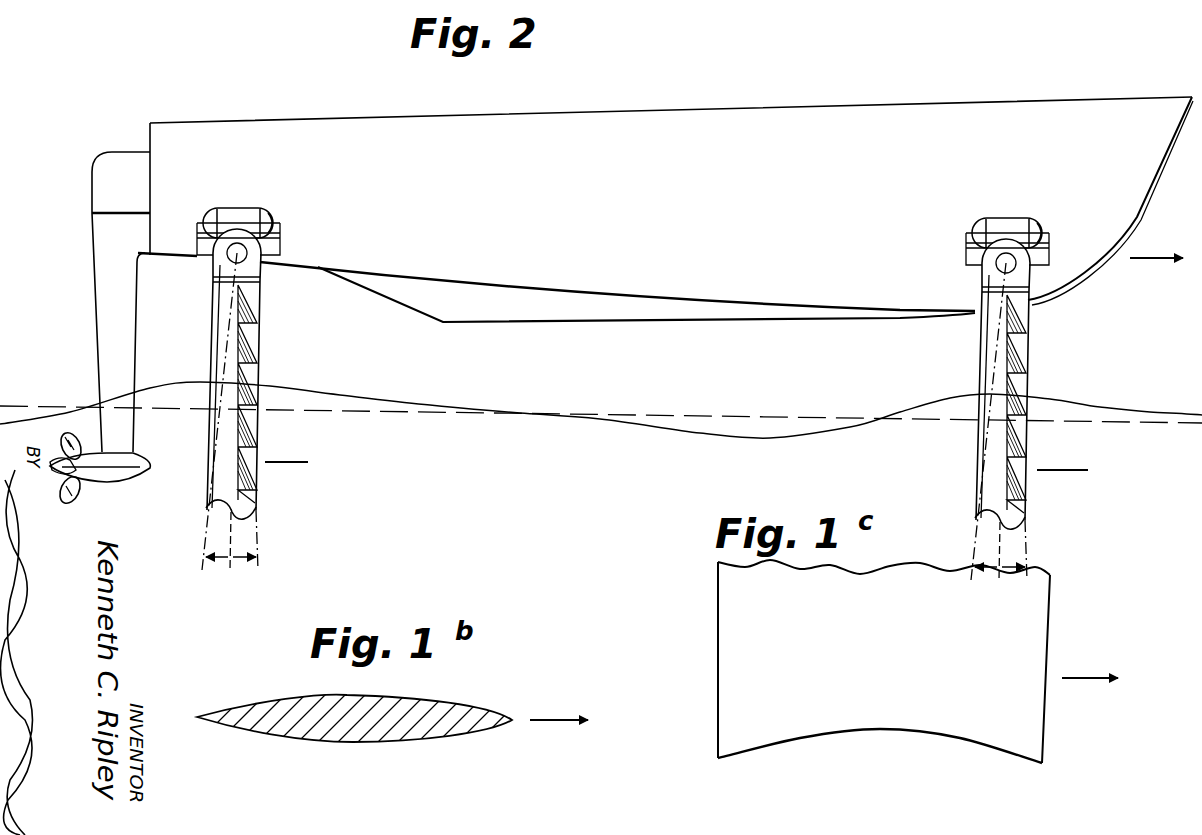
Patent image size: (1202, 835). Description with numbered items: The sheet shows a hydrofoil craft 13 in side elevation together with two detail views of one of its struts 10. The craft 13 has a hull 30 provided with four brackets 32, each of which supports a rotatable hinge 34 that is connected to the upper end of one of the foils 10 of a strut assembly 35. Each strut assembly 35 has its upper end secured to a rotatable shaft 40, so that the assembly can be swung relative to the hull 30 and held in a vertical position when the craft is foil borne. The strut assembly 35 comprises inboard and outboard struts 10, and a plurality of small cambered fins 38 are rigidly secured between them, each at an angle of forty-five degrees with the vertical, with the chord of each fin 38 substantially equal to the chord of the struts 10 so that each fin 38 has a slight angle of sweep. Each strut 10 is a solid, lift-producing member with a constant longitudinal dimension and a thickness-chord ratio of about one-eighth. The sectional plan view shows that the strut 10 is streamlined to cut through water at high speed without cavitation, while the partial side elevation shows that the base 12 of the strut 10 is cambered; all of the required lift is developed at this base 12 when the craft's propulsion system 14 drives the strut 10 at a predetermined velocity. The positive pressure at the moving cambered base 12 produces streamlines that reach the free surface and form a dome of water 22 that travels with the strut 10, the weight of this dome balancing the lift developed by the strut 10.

In FIG. 2, the strut 10 is at (211, 326).
In FIG. 1B, the strut 10 is at (366, 748).
In FIG. 1C, the strut 10 is at (725, 633).
In FIG. 2, the base 12 is at (215, 512).
In FIG. 1C, the base 12 is at (866, 732).
In FIG. 2, the craft 13 is at (704, 108).
In FIG. 2, the propulsion system 14 is at (84, 496).
In FIG. 2, the dome of water 22 is at (345, 396).
In FIG. 2, the hull 30 is at (746, 275).
In FIG. 2, the bracket 32 is at (281, 228).
In FIG. 2, the rotatable hinge 34 is at (236, 210).
In FIG. 2, the strut assembly 35 is at (263, 357).
In FIG. 2, the cambered fin 38 is at (253, 458).
In FIG. 2, the rotatable shaft 40 is at (230, 258).